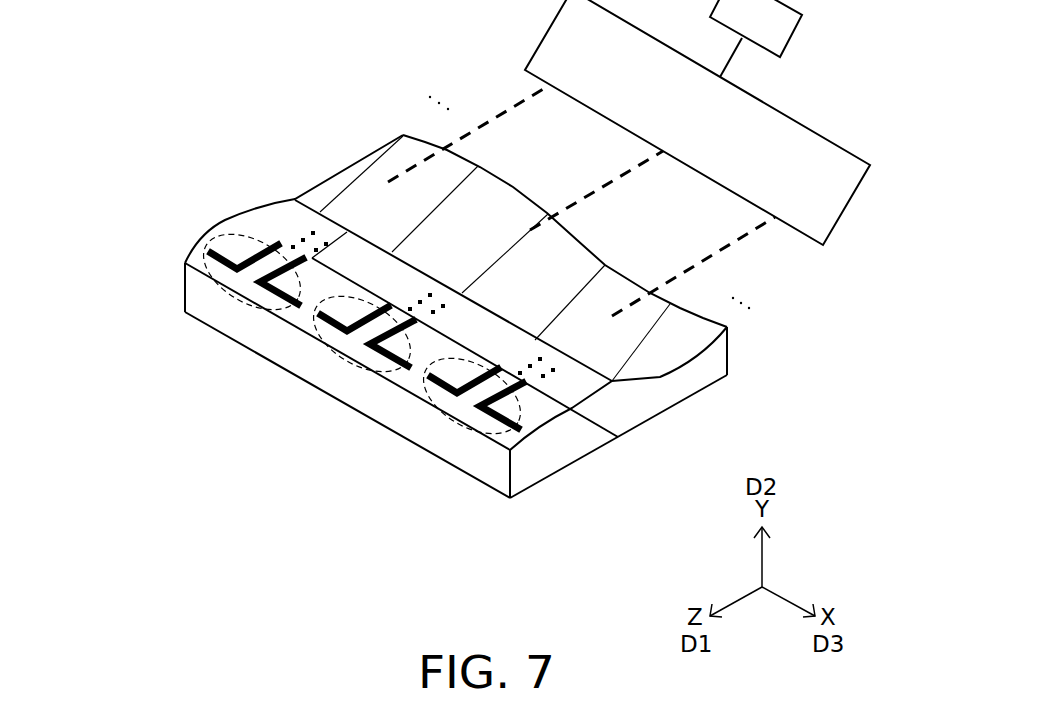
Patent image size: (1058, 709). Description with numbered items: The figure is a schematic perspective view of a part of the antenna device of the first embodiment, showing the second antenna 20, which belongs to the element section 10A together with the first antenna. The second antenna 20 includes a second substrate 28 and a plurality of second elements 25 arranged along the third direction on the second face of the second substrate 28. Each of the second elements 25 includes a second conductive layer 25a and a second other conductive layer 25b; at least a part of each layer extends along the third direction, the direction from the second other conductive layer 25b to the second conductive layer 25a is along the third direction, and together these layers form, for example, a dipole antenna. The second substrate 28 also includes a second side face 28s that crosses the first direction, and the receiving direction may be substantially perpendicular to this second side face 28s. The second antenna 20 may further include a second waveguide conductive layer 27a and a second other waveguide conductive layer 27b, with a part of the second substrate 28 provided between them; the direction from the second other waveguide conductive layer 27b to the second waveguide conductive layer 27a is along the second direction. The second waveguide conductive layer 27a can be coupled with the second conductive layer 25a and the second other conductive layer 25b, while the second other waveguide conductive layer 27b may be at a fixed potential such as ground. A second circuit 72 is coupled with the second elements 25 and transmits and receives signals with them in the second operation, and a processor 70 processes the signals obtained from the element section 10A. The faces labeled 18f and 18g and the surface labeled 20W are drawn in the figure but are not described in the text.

The element section 10A is at (213, 78).
The second antenna 20 is at (182, 200).
The wavy surface 20W is at (350, 160).
The second substrate 28 is at (207, 264).
The second side face 28s is at (192, 312).
The second elements 25 is at (442, 434).
The second conductive layer 25a is at (282, 297).
The second other conductive layer 25b is at (232, 266).
The inclined face 18f is at (546, 399).
The front face 18g is at (484, 500).
The second waveguide conductive layer 27a is at (667, 353).
The second other waveguide conductive layer 27b is at (683, 416).
The processor 70 is at (797, 35).
The second circuit 72 is at (805, 123).